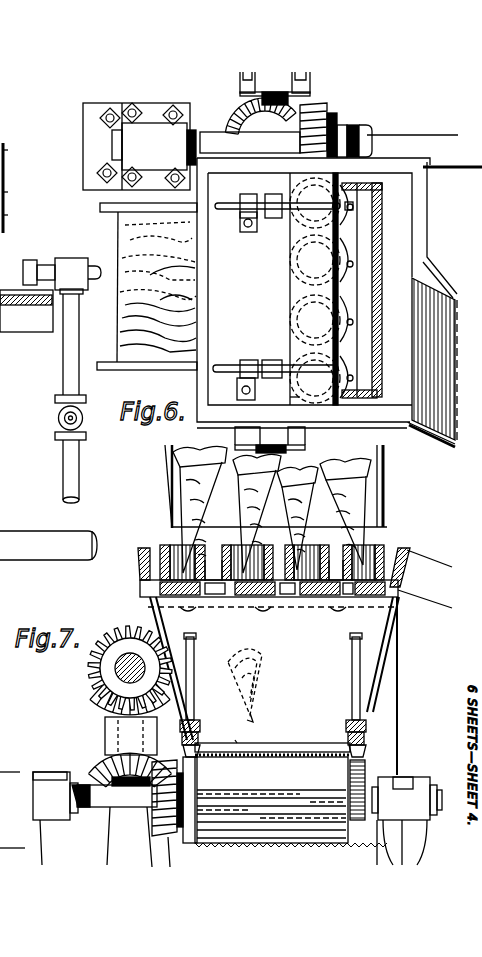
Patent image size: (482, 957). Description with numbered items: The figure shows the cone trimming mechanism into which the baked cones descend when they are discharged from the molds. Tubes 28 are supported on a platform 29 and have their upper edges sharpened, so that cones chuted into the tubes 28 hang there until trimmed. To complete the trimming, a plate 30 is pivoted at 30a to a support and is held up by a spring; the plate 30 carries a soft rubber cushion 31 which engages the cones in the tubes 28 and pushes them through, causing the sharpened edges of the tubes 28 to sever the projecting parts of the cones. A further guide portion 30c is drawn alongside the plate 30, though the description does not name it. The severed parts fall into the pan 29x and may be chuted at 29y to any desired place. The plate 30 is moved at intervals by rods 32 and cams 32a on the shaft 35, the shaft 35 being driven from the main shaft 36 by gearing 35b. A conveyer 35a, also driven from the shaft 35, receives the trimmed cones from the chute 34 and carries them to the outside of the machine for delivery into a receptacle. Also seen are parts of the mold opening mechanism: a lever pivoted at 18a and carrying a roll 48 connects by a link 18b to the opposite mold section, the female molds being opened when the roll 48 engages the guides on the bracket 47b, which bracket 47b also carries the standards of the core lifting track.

In FIG. 6, the pivot 18a is at (3, 193).
In FIG. 6, the link 18b is at (3, 183).
In FIG. 6, the roll 48 is at (3, 215).
In FIG. 6, the bracket 47b is at (26, 311).
In FIG. 6, the main shaft 36 is at (392, 138).
In FIG. 7, the main shaft 36 is at (37, 527).
In FIG. 6, the shaft 35 is at (262, 100).
In FIG. 7, the shaft 35 is at (270, 450).
In FIG. 6, the conveyer 35a is at (118, 255).
In FIG. 7, the conveyer 35a is at (296, 752).
In FIG. 6, the gearing 35b is at (314, 114).
In FIG. 7, the gearing 35b is at (130, 627).
In FIG. 6, the platform 29 is at (327, 301).
In FIG. 7, the platform 29 is at (205, 598).
In FIG. 6, the pan 29x is at (420, 242).
In FIG. 7, the pan 29x is at (143, 562).
In FIG. 6, the chute 29y is at (450, 430).
In FIG. 7, the chute 29y is at (421, 578).
In FIG. 6, the tubes 28 is at (321, 289).
In FIG. 7, the tubes 28 is at (173, 560).
In FIG. 6, the plate 30 is at (291, 233).
In FIG. 6, the pivot 30a is at (240, 194).
In FIG. 6, the guide plate 30c is at (370, 341).
In FIG. 7, the guide plate 30c is at (395, 500).
In FIG. 6, the soft rubber cushion 31 is at (290, 397).
In FIG. 7, the rods 32 is at (194, 643).
In FIG. 7, the cams 32a is at (190, 770).
In FIG. 7, the chute 34 is at (222, 733).